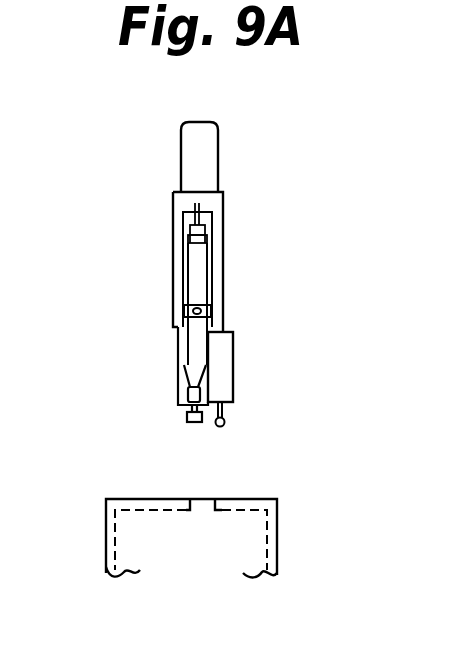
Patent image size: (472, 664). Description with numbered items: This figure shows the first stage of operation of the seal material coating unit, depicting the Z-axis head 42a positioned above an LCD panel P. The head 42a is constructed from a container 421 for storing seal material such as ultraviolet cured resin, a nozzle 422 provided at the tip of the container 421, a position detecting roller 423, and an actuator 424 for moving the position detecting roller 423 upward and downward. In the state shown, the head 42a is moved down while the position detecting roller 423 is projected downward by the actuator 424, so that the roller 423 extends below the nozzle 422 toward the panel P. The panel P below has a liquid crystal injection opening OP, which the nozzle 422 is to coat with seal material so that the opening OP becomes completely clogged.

The head 42a is at (201, 276).
The container 421 is at (189, 270).
The nozzle 422 is at (197, 430).
The position detecting roller 423 is at (226, 427).
The actuator 424 is at (232, 352).
The liquid crystal injection opening OP is at (203, 499).
The LCD panel P is at (234, 508).